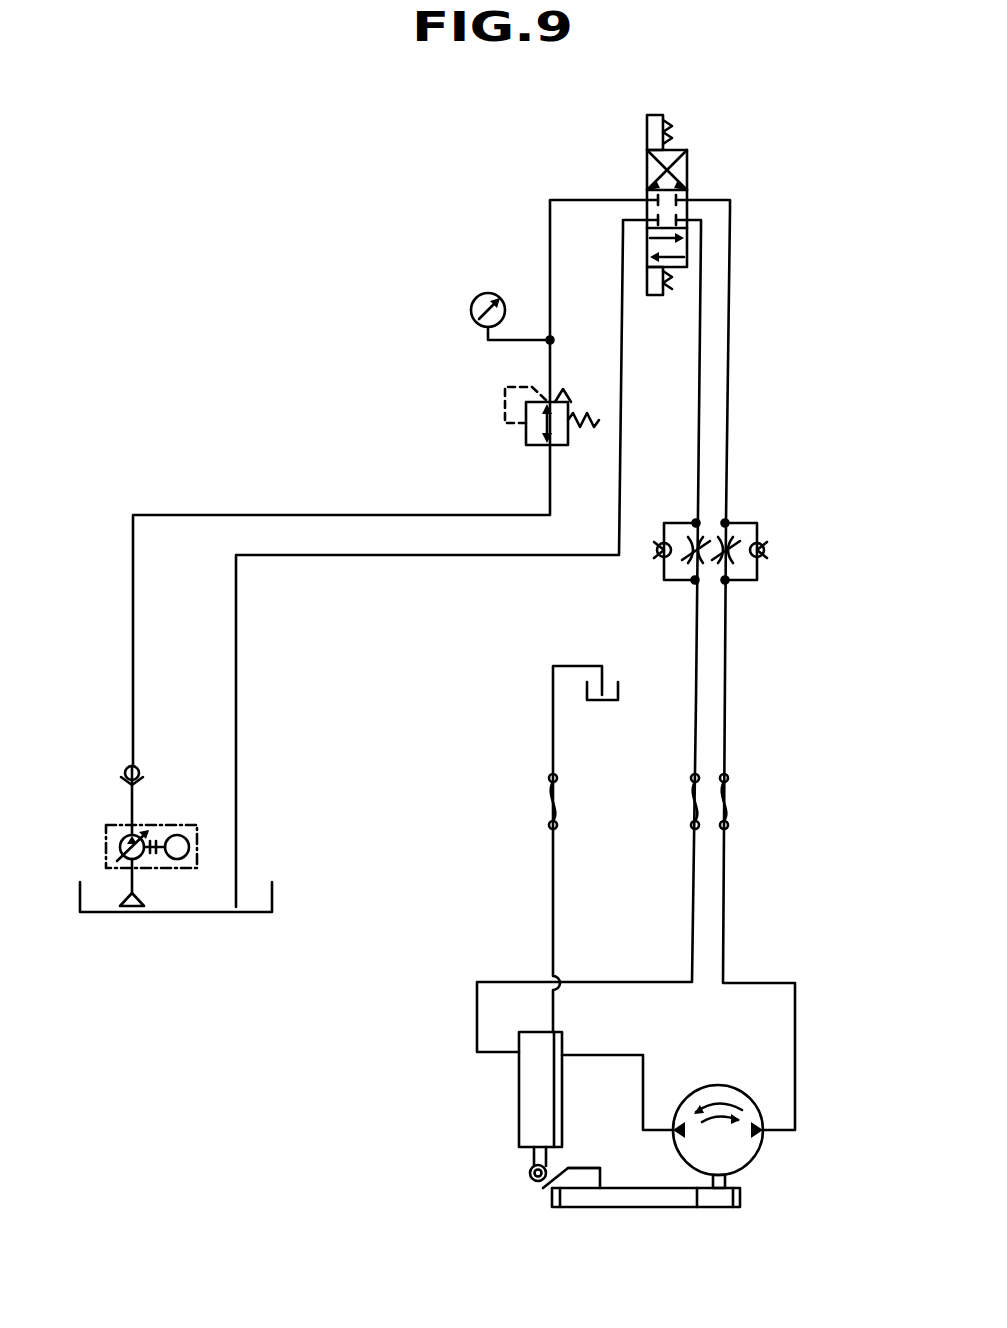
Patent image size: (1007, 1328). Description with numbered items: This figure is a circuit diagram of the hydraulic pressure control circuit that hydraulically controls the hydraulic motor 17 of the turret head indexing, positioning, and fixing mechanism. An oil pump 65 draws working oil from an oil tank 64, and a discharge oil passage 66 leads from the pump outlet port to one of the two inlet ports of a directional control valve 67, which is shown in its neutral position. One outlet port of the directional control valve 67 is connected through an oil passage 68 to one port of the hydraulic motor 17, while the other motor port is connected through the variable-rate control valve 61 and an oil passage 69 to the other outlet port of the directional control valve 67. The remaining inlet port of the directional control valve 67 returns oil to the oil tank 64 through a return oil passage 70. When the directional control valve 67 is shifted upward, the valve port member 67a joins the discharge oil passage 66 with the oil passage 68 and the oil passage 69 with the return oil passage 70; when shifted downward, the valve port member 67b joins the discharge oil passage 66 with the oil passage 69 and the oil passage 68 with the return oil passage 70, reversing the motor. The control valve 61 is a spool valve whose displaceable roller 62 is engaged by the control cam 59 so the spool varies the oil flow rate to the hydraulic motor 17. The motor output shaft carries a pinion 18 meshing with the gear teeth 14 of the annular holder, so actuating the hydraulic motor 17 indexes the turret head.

The gear teeth 14 is at (607, 1200).
The hydraulic motor 17 is at (752, 1097).
The pinion 18 is at (720, 1208).
The control cam 59 is at (583, 1178).
The variable-rate control valve 61 is at (520, 1090).
The displaceable roller 62 is at (530, 1181).
The oil tank 64 is at (210, 915).
The oil pump 65 is at (180, 825).
The discharge oil passage 66 is at (292, 510).
The directional control valve 67 is at (690, 177).
The valve port member 67a is at (677, 248).
The valve port member 67b is at (657, 172).
The oil passage 68 is at (725, 657).
The oil passage 69 is at (694, 720).
The return oil passage 70 is at (237, 668).